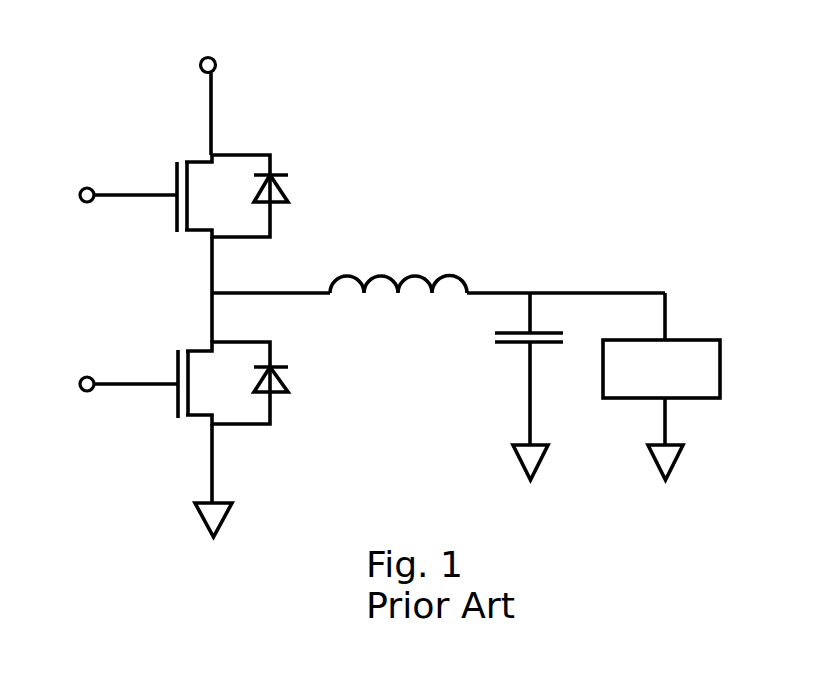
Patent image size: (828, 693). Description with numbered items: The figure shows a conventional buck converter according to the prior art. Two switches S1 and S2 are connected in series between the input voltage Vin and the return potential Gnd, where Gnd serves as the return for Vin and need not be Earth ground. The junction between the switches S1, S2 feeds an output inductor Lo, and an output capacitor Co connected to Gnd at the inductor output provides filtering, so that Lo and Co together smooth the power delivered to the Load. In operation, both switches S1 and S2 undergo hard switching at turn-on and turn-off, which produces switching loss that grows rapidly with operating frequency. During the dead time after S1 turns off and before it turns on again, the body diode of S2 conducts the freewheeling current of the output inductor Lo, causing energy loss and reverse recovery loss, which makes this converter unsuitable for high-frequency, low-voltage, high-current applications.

The input voltage Vin is at (236, 102).
The switch S1 is at (184, 196).
The switch S2 is at (184, 383).
The return potential Gnd is at (251, 480).
The output inductor Lo is at (392, 280).
The output capacitor Co is at (510, 345).
The load Load is at (661, 386).